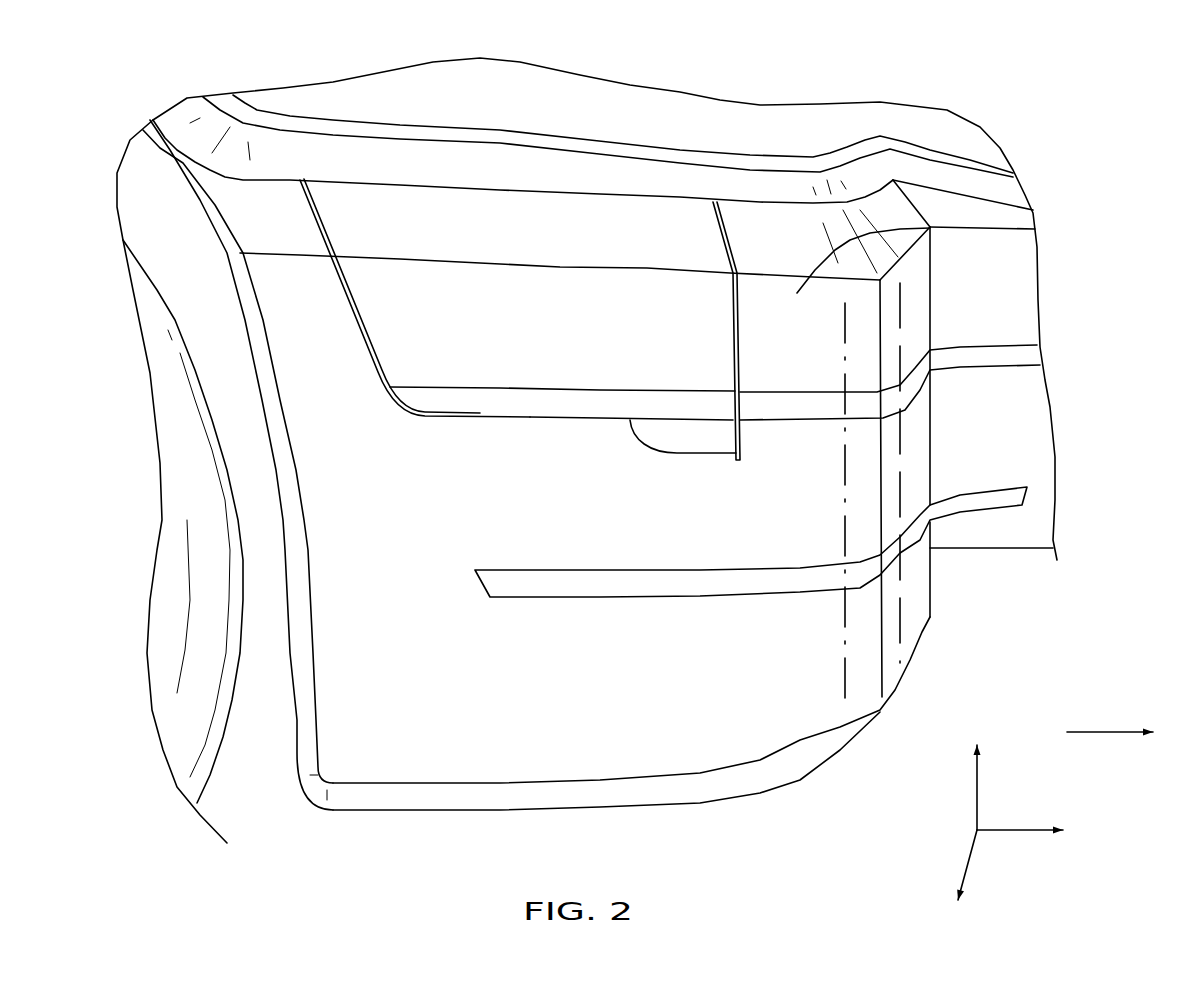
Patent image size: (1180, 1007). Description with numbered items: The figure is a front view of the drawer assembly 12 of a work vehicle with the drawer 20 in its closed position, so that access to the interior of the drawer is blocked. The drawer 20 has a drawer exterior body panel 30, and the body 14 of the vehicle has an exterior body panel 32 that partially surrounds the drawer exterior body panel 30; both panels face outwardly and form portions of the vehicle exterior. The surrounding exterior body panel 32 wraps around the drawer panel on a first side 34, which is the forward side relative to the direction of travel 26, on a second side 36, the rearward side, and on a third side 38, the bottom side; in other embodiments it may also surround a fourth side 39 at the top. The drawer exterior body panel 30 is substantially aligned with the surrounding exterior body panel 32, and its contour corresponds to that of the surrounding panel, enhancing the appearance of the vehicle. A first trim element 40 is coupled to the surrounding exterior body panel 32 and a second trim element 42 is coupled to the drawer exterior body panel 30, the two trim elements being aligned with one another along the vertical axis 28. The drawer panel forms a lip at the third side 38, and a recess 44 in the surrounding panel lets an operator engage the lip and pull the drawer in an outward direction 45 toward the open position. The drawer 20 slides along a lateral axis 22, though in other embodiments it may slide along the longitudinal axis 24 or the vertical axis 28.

The drawer assembly 12 is at (368, 410).
The body 14 is at (918, 316).
The drawer 20 is at (580, 360).
The lateral axis 22 is at (970, 857).
The longitudinal axis 24 is at (1005, 828).
The direction of travel 26 is at (1093, 730).
The vertical axis 28 is at (975, 820).
The drawer exterior body panel 30 is at (602, 227).
The exterior body panel 32 is at (1036, 230).
The first side 34 is at (739, 328).
The second side 36 is at (357, 322).
The third side 38 is at (527, 420).
The fourth side 39 is at (460, 187).
The first trim element 40 is at (785, 405).
The second trim element 42 is at (592, 402).
The recess 44 is at (690, 432).
The outward direction 45 is at (575, 495).